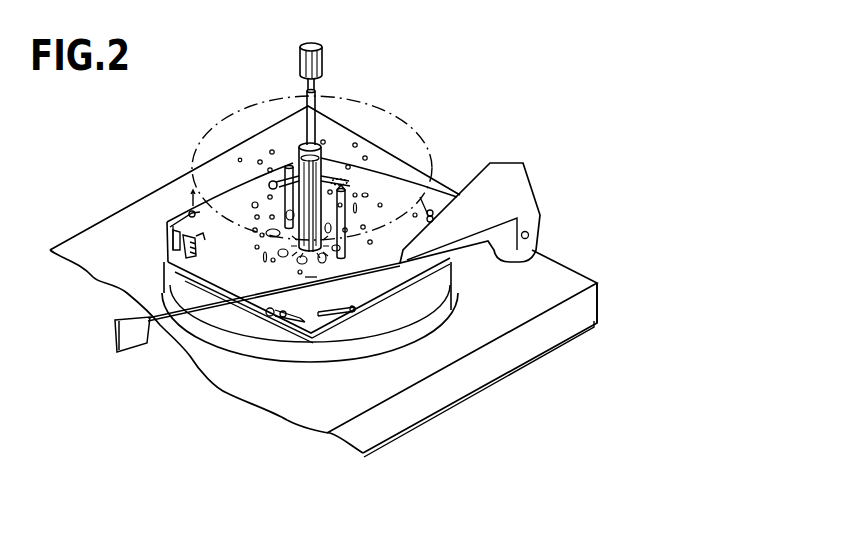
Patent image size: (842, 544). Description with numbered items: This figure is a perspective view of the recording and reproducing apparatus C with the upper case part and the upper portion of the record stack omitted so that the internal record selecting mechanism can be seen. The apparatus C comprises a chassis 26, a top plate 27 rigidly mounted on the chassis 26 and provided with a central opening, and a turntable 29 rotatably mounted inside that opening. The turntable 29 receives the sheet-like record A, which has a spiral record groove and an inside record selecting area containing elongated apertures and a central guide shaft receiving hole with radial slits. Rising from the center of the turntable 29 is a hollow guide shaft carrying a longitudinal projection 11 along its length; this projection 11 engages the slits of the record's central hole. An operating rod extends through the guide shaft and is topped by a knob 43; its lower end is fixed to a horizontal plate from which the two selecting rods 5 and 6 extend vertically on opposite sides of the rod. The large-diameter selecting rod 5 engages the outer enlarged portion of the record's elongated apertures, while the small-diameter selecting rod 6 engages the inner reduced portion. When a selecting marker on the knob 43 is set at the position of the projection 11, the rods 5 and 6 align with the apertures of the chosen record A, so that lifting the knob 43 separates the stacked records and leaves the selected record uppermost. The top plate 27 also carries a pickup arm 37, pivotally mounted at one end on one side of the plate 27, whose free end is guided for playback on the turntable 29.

The knob 43 is at (323, 60).
The longitudinal projection 11 is at (325, 163).
The large-diameter selecting rod 5 is at (346, 200).
The small-diameter selecting rod 6 is at (272, 184).
The record A is at (190, 217).
The turntable 29 is at (440, 308).
The chassis 26 is at (455, 393).
The top plate 27 is at (375, 390).
The pickup arm 37 is at (311, 277).
The recording and reproducing apparatus C is at (500, 512).